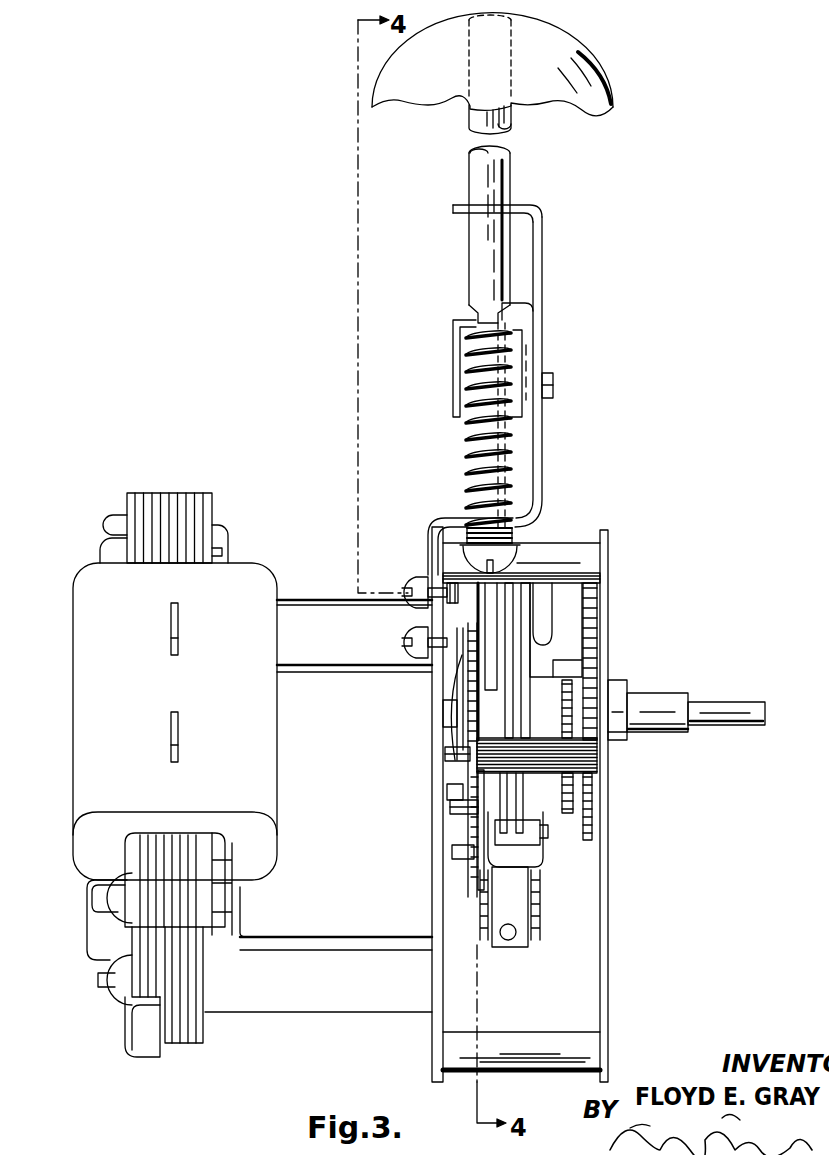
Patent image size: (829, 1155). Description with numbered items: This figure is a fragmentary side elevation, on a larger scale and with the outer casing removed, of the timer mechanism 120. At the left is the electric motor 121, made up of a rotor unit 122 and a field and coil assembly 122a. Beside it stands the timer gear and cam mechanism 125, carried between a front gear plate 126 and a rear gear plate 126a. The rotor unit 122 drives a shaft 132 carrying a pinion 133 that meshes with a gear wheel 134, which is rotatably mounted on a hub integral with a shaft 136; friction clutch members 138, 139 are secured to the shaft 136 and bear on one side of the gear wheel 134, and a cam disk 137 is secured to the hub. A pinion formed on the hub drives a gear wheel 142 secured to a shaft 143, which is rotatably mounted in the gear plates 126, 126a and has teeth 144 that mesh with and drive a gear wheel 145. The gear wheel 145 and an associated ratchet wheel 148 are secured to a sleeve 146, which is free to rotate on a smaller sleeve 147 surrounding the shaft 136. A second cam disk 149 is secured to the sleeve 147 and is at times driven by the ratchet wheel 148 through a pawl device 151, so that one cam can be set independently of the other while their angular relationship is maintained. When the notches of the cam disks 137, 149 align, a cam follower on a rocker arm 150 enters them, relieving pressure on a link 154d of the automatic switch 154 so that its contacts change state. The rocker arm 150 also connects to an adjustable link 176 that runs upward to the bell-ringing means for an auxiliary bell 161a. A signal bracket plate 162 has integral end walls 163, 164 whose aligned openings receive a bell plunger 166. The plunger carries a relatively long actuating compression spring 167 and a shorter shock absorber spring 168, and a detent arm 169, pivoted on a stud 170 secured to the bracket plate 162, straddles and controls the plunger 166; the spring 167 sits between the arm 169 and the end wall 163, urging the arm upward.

The auxiliary bell 161a is at (577, 56).
The end wall 164 is at (500, 208).
The bell plunger 166 is at (493, 258).
The signal bracket plate 162 is at (540, 323).
The stud 170 is at (555, 385).
The detent arm 169 is at (460, 374).
The actuating compression spring 167 is at (513, 437).
The end wall 163 is at (515, 520).
The shock absorber spring 168 is at (520, 538).
The adjustable link 176 is at (458, 600).
The timer mechanism 120 is at (581, 541).
The rear gear plate 126a is at (433, 1031).
The timer gear and cam mechanism 125 is at (608, 984).
The front gear plate 126 is at (607, 905).
The gear wheel 134 is at (455, 626).
The friction clutch member 139 is at (455, 655).
The pinion 133 is at (487, 778).
The friction clutch member 138 is at (448, 775).
The shaft 132 is at (447, 795).
The shaft 143 is at (462, 810).
The gear wheel 142 is at (470, 873).
The cam disk 137 is at (503, 625).
The pawl device 151 is at (567, 627).
The cam disk 149 is at (520, 672).
The ratchet wheel 148 is at (575, 690).
The gear wheel 145 is at (590, 825).
The teeth 144 is at (600, 758).
The sleeve 146 is at (625, 683).
The sleeve 147 is at (658, 700).
The shaft 136 is at (720, 707).
The rocker arm 150 is at (513, 873).
The automatic switch 154 is at (530, 920).
The link 154d is at (518, 940).
The electric motor 121 is at (277, 585).
The field and coil assembly 122a is at (240, 575).
The rotor unit 122 is at (307, 930).